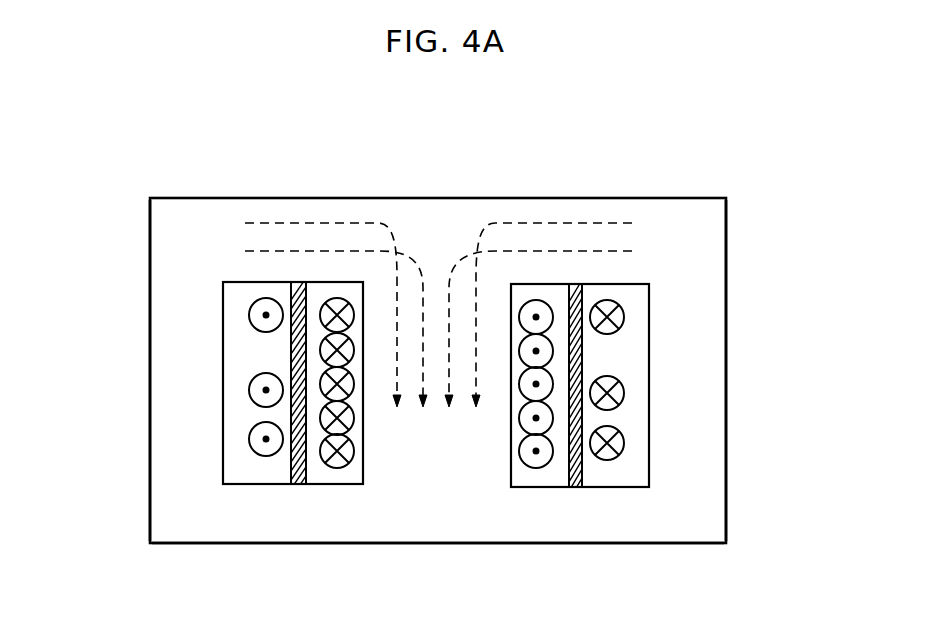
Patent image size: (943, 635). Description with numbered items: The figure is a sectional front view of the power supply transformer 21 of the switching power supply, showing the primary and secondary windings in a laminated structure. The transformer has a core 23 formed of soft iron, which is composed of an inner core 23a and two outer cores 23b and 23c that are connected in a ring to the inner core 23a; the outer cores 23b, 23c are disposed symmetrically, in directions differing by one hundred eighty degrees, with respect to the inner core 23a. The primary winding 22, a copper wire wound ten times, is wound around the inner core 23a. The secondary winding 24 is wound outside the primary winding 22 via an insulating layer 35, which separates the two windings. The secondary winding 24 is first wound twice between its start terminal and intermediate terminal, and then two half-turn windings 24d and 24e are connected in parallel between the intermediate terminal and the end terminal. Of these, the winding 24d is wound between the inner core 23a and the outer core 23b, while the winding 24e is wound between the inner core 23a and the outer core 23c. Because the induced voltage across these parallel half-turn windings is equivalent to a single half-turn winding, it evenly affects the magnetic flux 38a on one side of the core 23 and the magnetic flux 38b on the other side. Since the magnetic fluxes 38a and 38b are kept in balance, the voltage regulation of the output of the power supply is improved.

The power supply transformer 21 is at (403, 190).
The primary winding 22 is at (347, 420).
The core 23 is at (483, 198).
The inner core 23a is at (440, 448).
The outer core 23b is at (165, 349).
The outer core 23c is at (713, 463).
The secondary winding 24 is at (233, 380).
The 0.5-turn winding 24d is at (250, 313).
The 0.5-turn winding 24e is at (617, 316).
The insulating layer 35 is at (297, 485).
The magnetic flux 38a is at (270, 233).
The magnetic flux 38b is at (578, 230).